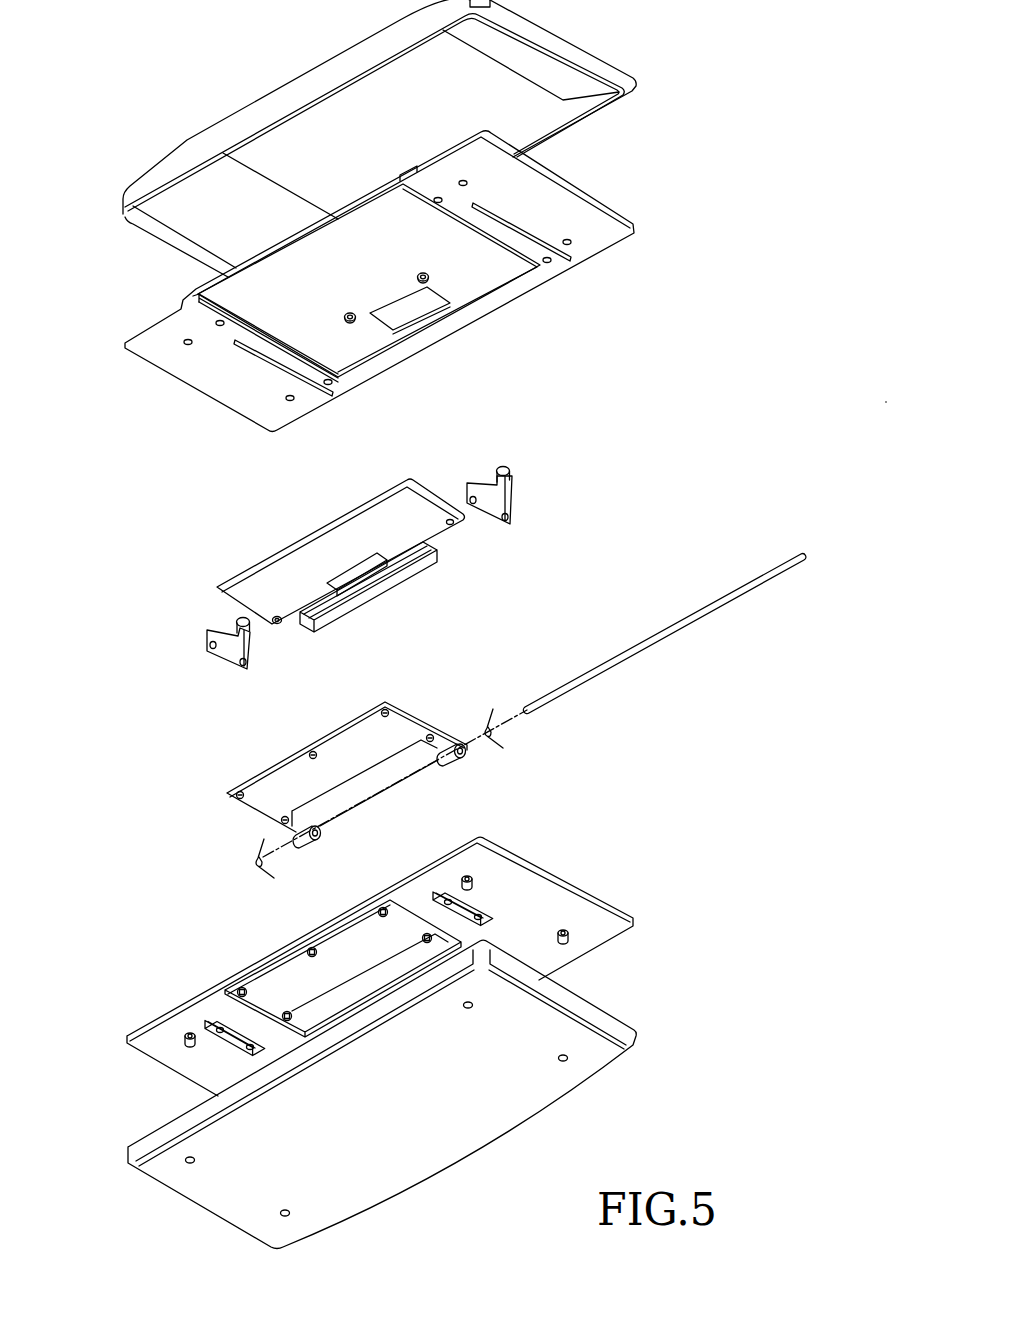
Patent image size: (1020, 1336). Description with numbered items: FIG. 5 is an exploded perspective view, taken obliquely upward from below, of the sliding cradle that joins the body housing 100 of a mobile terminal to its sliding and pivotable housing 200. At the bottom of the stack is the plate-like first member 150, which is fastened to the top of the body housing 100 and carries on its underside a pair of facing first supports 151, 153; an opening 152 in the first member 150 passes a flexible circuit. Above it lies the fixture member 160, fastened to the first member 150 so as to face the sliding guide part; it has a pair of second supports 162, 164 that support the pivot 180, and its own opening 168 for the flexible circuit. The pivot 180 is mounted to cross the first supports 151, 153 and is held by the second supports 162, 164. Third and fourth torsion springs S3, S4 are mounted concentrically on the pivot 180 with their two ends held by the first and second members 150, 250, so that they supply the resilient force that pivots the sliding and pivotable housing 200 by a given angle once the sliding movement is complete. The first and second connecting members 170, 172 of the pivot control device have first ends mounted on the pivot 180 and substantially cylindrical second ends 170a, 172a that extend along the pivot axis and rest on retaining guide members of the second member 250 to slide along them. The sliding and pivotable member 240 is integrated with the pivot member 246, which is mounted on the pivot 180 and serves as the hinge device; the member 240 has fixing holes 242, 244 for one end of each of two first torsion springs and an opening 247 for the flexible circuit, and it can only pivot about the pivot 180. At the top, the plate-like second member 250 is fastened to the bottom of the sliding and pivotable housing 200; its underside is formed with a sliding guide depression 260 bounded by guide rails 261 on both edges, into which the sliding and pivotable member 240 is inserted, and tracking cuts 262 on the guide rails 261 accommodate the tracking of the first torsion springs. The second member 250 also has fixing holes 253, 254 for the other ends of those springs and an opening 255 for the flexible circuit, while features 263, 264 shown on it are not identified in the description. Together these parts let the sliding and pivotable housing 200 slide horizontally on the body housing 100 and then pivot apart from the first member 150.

The body housing 100 is at (623, 1003).
The first member 150 is at (612, 885).
The first support 151 is at (213, 1025).
The opening 152 is at (320, 1006).
The first support 153 is at (480, 910).
The fixture member 160 is at (408, 722).
The second support 162 is at (306, 841).
The second support 164 is at (456, 767).
The opening 168 is at (363, 782).
The third torsion spring S3 is at (253, 853).
The fourth torsion spring S4 is at (505, 742).
The first connecting member 170 is at (520, 500).
The second end of first connecting member 170a is at (512, 473).
The second connecting member 172 is at (222, 657).
The second end of second connecting member 172a is at (240, 622).
The pivot 180 is at (653, 642).
The sliding and pivotable member 240 is at (241, 552).
The fixing hole 242 is at (277, 627).
The fixing hole 244 is at (455, 527).
The pivot member 246 is at (370, 593).
The opening 247 is at (348, 568).
The second member 250 is at (612, 186).
The fixing hole 253 is at (353, 322).
The fixing hole 254 is at (430, 280).
The opening 255 is at (411, 313).
The sliding guide depression 260 is at (355, 358).
The guide rail 261 is at (203, 296).
The tracking cut 262 is at (288, 352).
The guide slot 263 is at (240, 345).
The guide slot 264 is at (572, 258).
The sliding and pivotable housing 200 is at (596, 36).